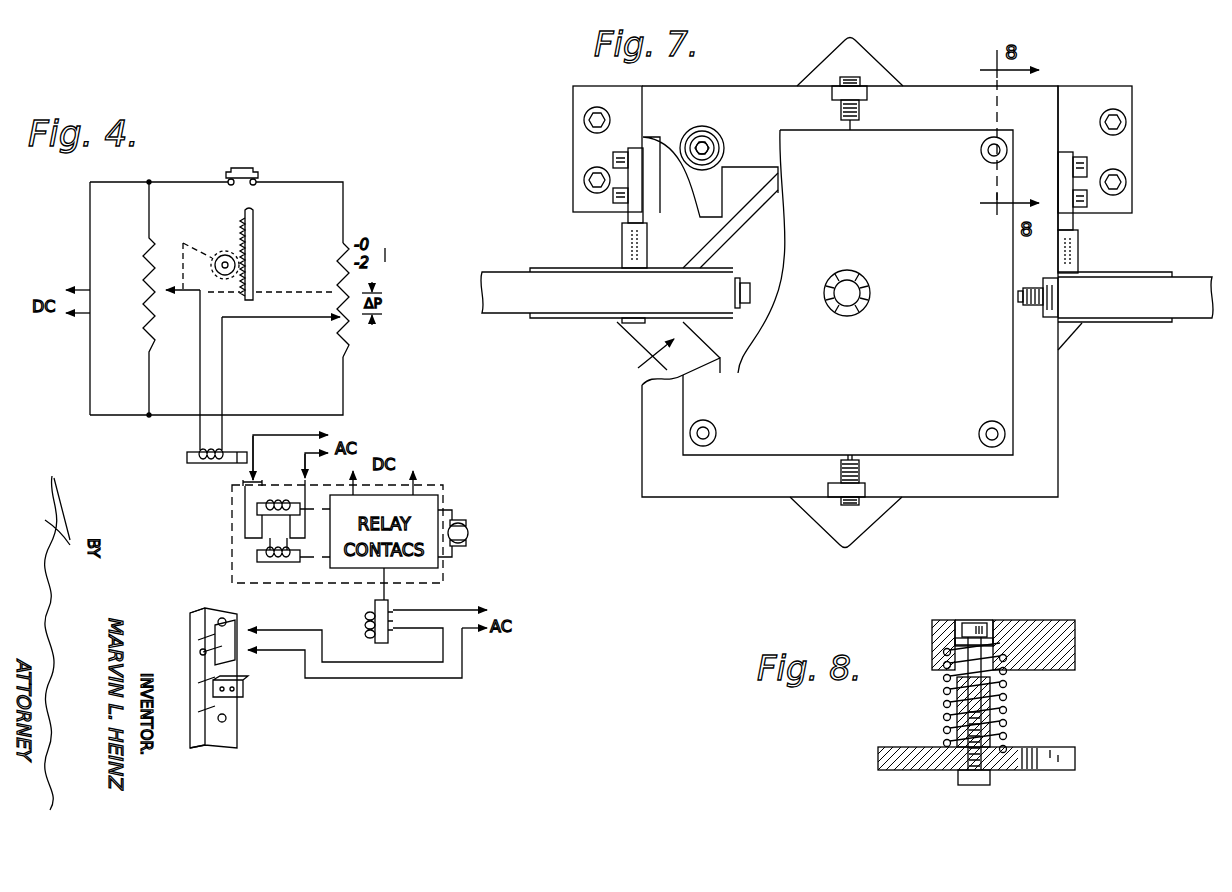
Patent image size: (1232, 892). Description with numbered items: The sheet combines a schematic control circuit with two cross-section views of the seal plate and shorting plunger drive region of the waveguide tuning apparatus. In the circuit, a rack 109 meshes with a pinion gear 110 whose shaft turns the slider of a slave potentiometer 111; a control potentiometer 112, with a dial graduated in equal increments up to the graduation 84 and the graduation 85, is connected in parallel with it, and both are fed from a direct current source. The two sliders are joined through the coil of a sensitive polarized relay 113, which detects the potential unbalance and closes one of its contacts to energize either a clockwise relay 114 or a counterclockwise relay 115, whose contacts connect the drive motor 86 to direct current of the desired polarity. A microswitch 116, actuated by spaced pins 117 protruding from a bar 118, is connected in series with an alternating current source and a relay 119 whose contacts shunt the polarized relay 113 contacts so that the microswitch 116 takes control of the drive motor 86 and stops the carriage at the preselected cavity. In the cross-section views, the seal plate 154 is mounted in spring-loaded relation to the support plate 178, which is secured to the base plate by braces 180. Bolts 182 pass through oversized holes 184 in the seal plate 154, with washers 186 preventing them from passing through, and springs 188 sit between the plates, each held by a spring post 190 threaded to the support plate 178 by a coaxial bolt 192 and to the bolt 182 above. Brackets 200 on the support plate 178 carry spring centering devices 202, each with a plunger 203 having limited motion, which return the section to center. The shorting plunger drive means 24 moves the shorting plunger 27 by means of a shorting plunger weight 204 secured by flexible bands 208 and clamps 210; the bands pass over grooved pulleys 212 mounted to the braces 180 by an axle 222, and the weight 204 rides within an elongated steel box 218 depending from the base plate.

In FIG. 4, the rack 109 is at (255, 246).
In FIG. 4, the pinion gear 110 is at (228, 251).
In FIG. 4, the slave potentiometer 111 is at (142, 294).
In FIG. 4, the control potentiometer 112 is at (338, 296).
In FIG. 4, the polarized relay 113 is at (187, 456).
In FIG. 4, the clockwise relay 114 is at (257, 509).
In FIG. 4, the counterclockwise relay 115 is at (257, 556).
In FIG. 4, the microswitch 116 is at (244, 681).
In FIG. 4, the pins 117 is at (198, 684).
In FIG. 4, the bar 118 is at (214, 619).
In FIG. 4, the relay 119 is at (375, 609).
In FIG. 4, the scale mark 84 is at (366, 335).
In FIG. 4, the dial graduation 85 is at (362, 347).
In FIG. 4, the drive motor 86 is at (468, 534).
In FIG. 7, the shorting plunger drive means 24 is at (639, 363).
In FIG. 7, the shorting plunger 27 is at (868, 301).
In FIG. 7, the seal plate 154 is at (1015, 437).
In FIG. 8, the seal plate 154 is at (1036, 620).
In FIG. 7, the support plate 178 is at (1058, 358).
In FIG. 8, the support plate 178 is at (1050, 748).
In FIG. 7, the braces 180 is at (655, 214).
In FIG. 7, the bolts 182 is at (703, 128).
In FIG. 8, the bolts 182 is at (975, 620).
In FIG. 8, the holes 184 is at (955, 643).
In FIG. 7, the washers 186 is at (722, 137).
In FIG. 8, the washers 186 is at (932, 628).
In FIG. 7, the springs 188 is at (691, 128).
In FIG. 8, the springs 188 is at (944, 694).
In FIG. 7, the spring post 190 is at (725, 149).
In FIG. 8, the spring post 190 is at (950, 734).
In FIG. 8, the coaxial bolt 192 is at (991, 776).
In FIG. 7, the brackets 200 is at (870, 92).
In FIG. 7, the spring centering devices 202 is at (860, 82).
In FIG. 7, the plunger 203 is at (1020, 294).
In FIG. 7, the shorting plunger weight 204 is at (747, 281).
In FIG. 7, the flexible bands 208 is at (513, 272).
In FIG. 7, the clamps 210 is at (733, 308).
In FIG. 7, the pulleys 212 is at (566, 268).
In FIG. 7, the box 218 is at (779, 251).
In FIG. 7, the axle 222 is at (648, 247).